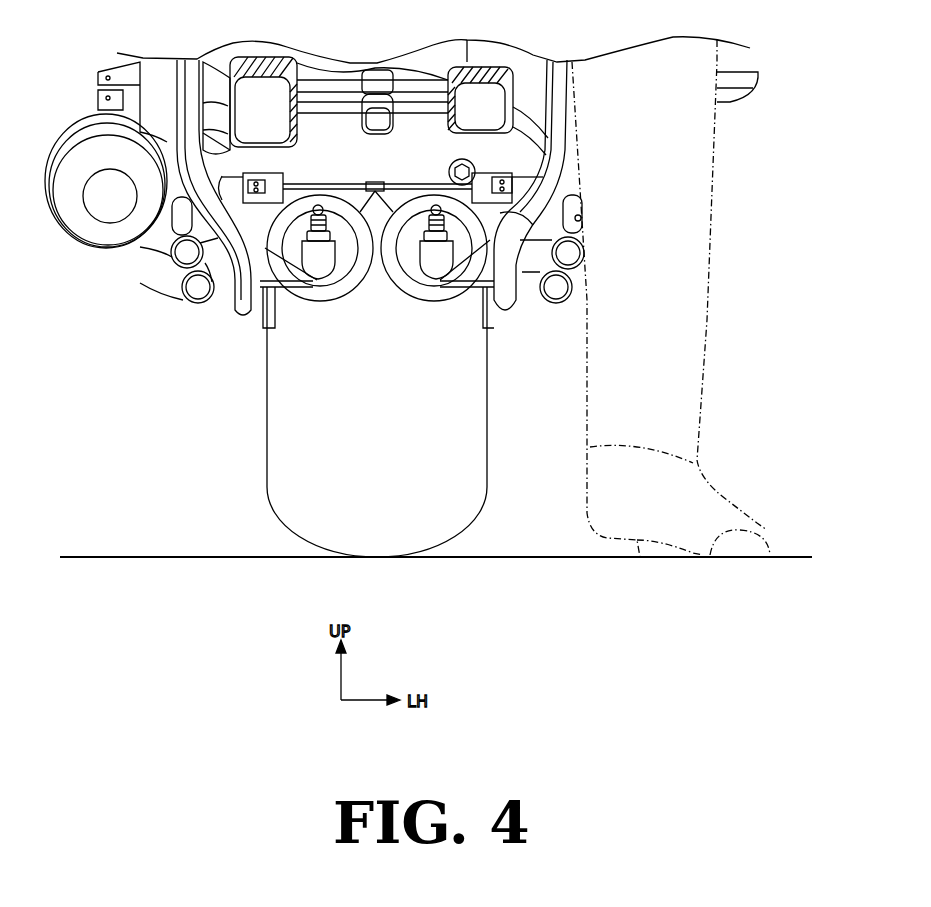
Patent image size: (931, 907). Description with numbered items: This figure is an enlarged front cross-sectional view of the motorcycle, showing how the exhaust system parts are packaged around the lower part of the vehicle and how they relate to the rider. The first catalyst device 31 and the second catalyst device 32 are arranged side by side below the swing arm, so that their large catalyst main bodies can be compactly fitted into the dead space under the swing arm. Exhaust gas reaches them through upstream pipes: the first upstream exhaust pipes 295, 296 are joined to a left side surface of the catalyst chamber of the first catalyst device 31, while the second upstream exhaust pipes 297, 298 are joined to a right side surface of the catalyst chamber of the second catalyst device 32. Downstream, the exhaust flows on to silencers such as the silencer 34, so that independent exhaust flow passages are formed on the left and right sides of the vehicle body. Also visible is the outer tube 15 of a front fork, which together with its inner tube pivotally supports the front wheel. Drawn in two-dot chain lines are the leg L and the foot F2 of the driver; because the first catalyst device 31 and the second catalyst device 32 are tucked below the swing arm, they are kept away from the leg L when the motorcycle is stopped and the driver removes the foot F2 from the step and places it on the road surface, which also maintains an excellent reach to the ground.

The outer tube 15 is at (372, 538).
The first catalyst device 31 is at (436, 307).
The second catalyst device 32 is at (320, 307).
The silencer 34 is at (85, 248).
The first upstream exhaust pipe 295 is at (586, 258).
The first upstream exhaust pipe 296 is at (574, 293).
The second upstream exhaust pipe 297 is at (168, 258).
The second upstream exhaust pipe 298 is at (182, 296).
The leg of the driver L is at (712, 158).
The foot of the driver F2 is at (640, 557).